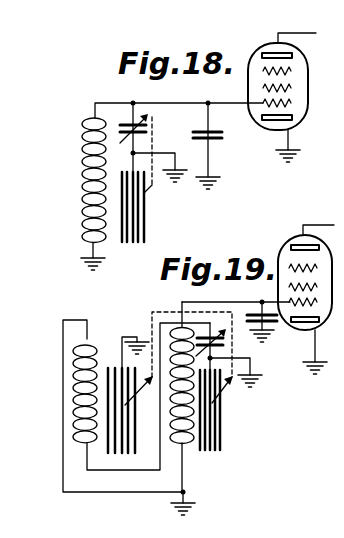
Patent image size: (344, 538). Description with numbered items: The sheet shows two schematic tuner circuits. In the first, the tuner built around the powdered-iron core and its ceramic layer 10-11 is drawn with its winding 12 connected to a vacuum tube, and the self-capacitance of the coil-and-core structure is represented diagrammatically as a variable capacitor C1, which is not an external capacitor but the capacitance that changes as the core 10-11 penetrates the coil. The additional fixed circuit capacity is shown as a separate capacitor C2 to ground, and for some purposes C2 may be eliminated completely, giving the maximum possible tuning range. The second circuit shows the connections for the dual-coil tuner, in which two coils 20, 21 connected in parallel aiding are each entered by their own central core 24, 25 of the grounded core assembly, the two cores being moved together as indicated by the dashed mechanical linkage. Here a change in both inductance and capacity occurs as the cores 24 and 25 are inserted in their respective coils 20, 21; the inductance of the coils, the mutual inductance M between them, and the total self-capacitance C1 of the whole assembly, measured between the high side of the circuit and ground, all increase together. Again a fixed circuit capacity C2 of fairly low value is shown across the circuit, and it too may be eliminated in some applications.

In FIG. 18, the inductance coil 12 is at (86, 122).
In FIG. 18, the variable capacitor C1 is at (148, 126).
In FIG. 19, the variable capacitor C1 is at (230, 350).
In FIG. 18, the fixed circuit capacity C2 is at (222, 137).
In FIG. 19, the fixed circuit capacity C2 is at (277, 325).
In FIG. 18, the powdered-iron core with ceramic layer 10-11 is at (107, 240).
In FIG. 19, the coil 20 is at (75, 334).
In FIG. 19, the coil 21 is at (176, 447).
In FIG. 19, the central core 24 is at (133, 395).
In FIG. 19, the central core 25 is at (222, 437).
In FIG. 19, the mutual inductance M is at (170, 342).